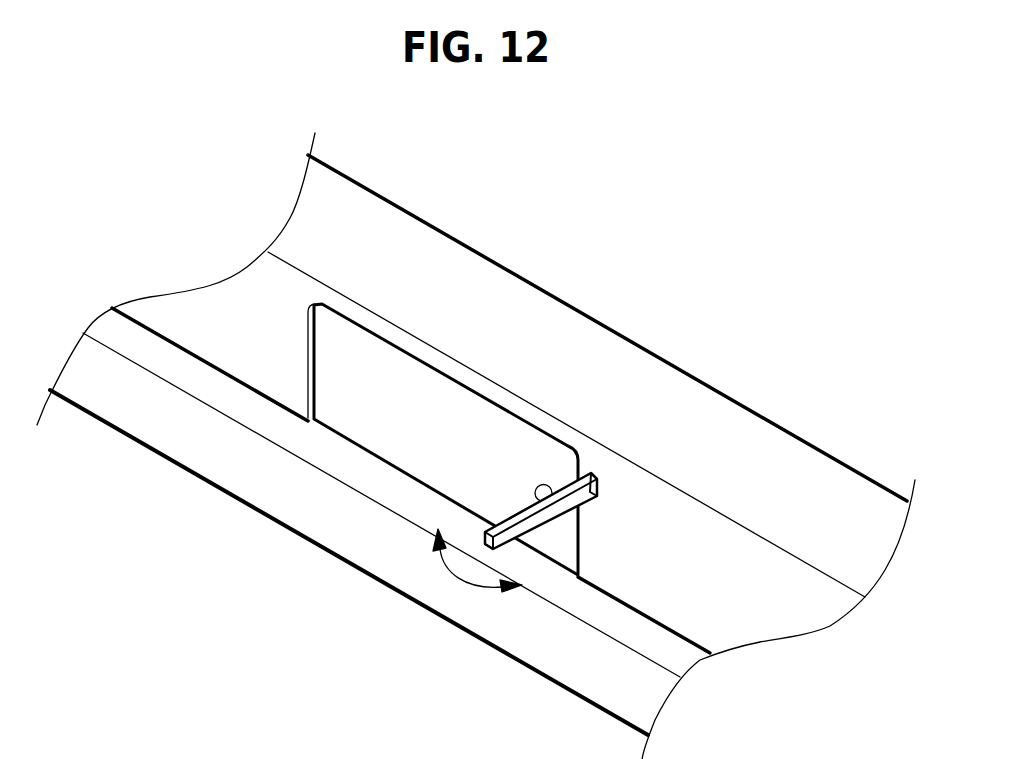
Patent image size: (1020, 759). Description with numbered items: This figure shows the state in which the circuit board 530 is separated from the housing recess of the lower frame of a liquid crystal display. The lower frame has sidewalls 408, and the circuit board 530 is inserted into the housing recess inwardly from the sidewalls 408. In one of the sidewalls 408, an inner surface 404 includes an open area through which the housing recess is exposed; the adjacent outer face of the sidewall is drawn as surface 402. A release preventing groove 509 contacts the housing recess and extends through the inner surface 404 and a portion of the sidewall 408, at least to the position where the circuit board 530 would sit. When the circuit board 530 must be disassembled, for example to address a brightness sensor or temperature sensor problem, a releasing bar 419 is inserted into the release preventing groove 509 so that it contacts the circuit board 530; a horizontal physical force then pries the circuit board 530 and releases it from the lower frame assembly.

The sidewall 408 is at (355, 170).
The upper surface 402 is at (697, 438).
The inner surface 404 is at (731, 558).
The circuit board 530 is at (374, 404).
The release preventing groove 509 is at (592, 462).
The releasing bar 419 is at (487, 533).